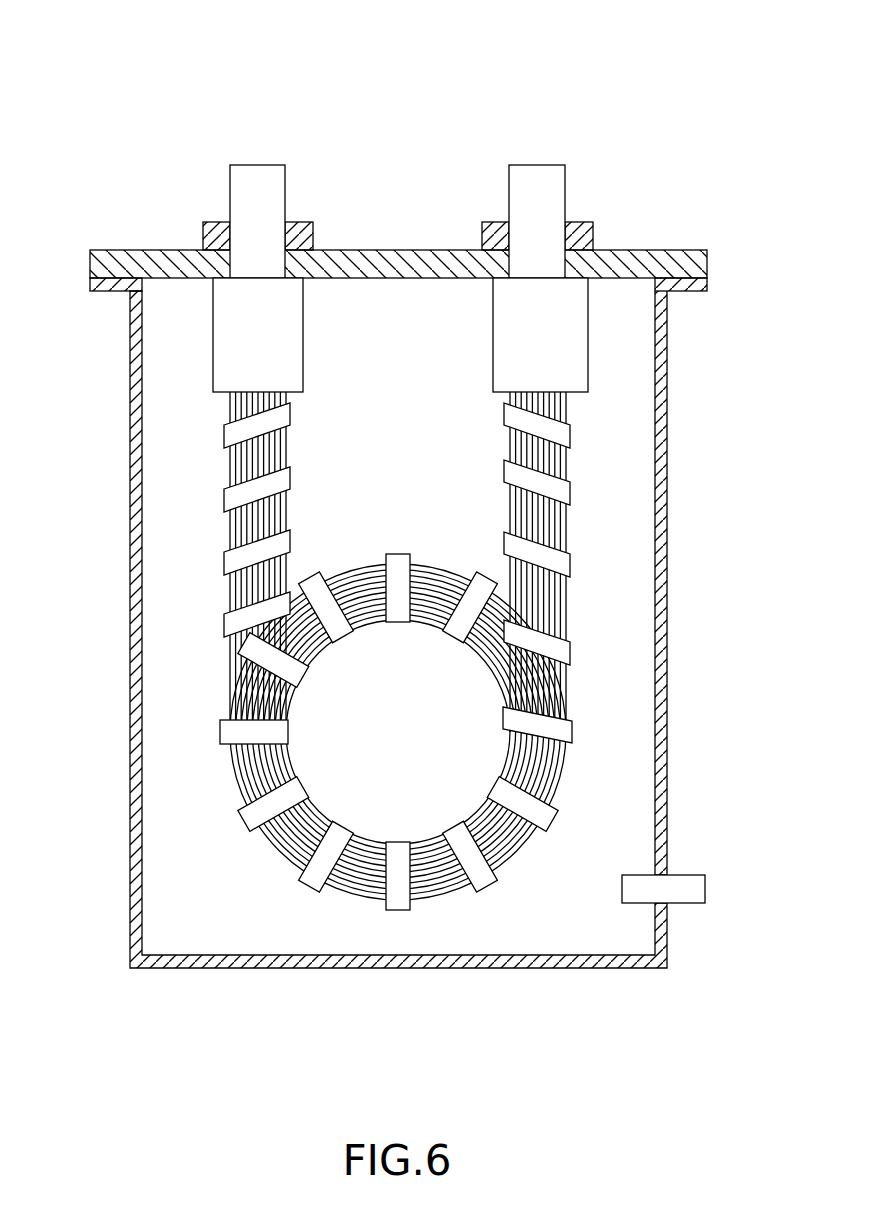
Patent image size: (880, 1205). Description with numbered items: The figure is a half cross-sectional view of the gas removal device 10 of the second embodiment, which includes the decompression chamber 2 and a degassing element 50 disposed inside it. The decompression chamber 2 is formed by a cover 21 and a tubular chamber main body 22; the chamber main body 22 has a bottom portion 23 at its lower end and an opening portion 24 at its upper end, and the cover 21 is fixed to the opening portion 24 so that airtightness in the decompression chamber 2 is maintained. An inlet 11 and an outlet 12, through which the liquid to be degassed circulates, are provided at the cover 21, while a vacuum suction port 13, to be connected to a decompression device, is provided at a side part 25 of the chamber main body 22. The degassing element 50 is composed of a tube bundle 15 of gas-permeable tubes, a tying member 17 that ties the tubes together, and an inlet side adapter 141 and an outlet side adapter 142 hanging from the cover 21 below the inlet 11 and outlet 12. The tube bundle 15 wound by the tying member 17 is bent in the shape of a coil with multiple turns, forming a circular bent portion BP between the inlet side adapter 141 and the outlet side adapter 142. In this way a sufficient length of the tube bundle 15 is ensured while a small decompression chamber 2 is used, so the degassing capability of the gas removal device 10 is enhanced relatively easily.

The gas removal device 10 is at (431, 548).
The decompression chamber 2 is at (435, 656).
The cover 21 is at (707, 262).
The chamber main body 22 is at (667, 323).
The bottom portion 23 is at (284, 968).
The opening portion 24 is at (92, 290).
The side part 25 is at (667, 650).
The inlet 11 is at (232, 268).
The outlet 12 is at (563, 268).
The inlet side adapter 141 is at (230, 351).
The outlet side adapter 142 is at (563, 363).
The tube bundle 15 is at (568, 533).
The tying member 17 is at (225, 733).
The degassing element 50 is at (207, 465).
The vacuum suction port 13 is at (660, 875).
The bent portion BP is at (482, 905).